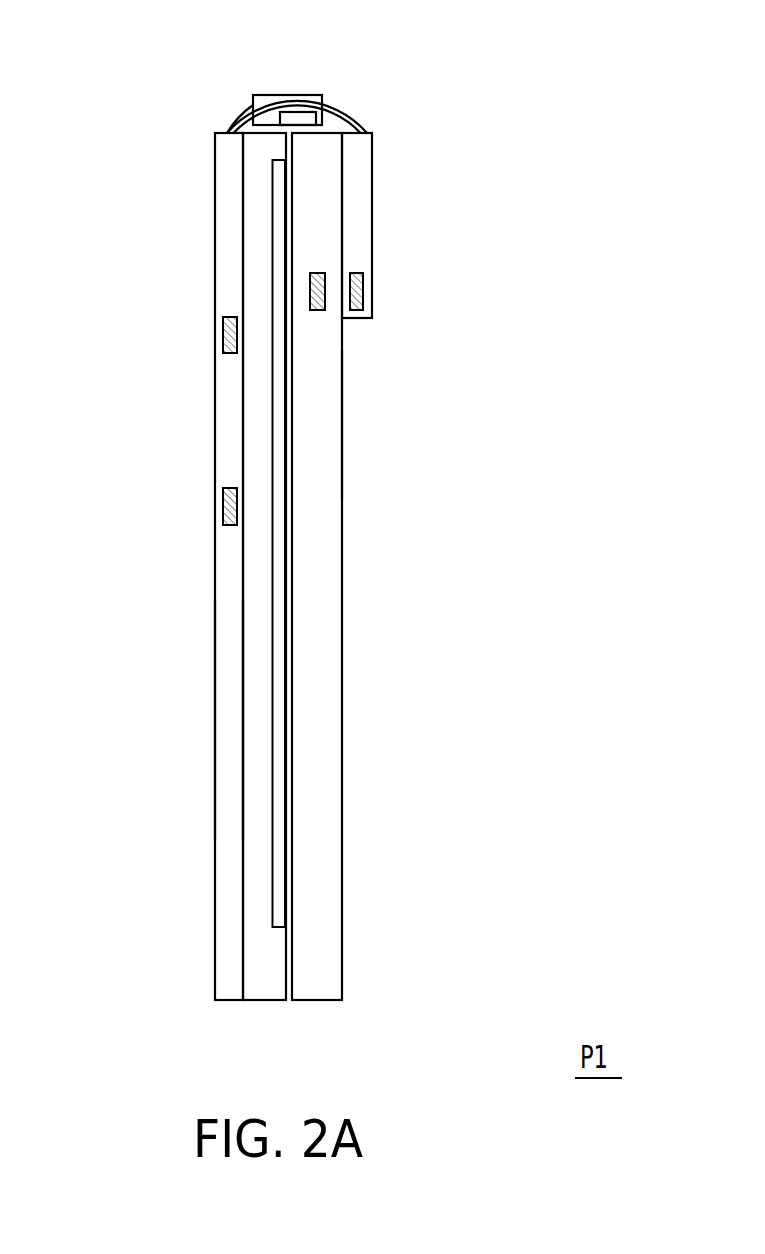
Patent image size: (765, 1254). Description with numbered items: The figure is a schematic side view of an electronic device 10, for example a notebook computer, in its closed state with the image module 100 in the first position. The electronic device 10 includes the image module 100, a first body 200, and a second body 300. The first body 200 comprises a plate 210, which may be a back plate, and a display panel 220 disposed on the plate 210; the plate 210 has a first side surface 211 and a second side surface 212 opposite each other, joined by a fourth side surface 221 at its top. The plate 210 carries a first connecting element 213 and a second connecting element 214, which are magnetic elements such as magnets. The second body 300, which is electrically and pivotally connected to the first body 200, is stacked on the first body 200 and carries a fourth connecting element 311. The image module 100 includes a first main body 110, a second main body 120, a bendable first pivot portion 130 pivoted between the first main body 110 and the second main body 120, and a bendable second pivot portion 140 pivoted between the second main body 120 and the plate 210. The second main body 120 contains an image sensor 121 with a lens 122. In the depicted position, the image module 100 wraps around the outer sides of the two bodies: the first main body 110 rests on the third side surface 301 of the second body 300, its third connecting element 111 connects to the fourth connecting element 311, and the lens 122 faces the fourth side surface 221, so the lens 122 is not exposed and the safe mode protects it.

The electronic device 10 is at (379, 1017).
The image module 100 is at (376, 62).
The first main body 110 is at (360, 203).
The third connecting element 111 is at (358, 290).
The second main body 120 is at (268, 107).
The image sensor 121 is at (297, 117).
The lens 122 is at (306, 138).
The first pivot portion 130 is at (352, 118).
The second pivot portion 140 is at (230, 128).
The first body 200 is at (138, 582).
The plate 210 is at (232, 593).
The first side surface 211 is at (252, 722).
The second side surface 212 is at (206, 724).
The first connecting element 213 is at (229, 333).
The second connecting element 214 is at (228, 506).
The display panel 220 is at (260, 649).
The fourth side surface 221 is at (253, 124).
The second body 300 is at (320, 852).
The third side surface 301 is at (354, 426).
The fourth connecting element 311 is at (317, 312).